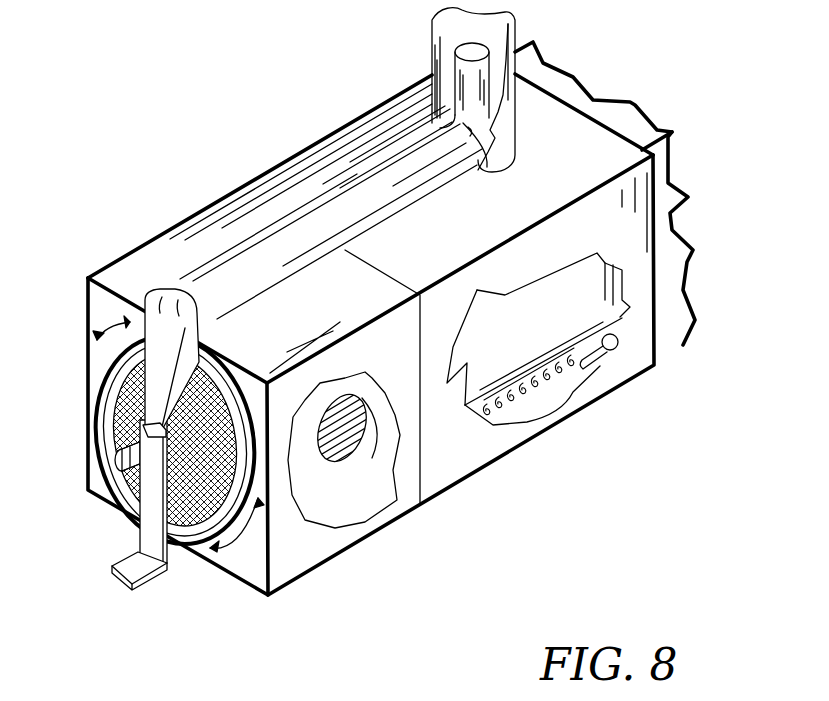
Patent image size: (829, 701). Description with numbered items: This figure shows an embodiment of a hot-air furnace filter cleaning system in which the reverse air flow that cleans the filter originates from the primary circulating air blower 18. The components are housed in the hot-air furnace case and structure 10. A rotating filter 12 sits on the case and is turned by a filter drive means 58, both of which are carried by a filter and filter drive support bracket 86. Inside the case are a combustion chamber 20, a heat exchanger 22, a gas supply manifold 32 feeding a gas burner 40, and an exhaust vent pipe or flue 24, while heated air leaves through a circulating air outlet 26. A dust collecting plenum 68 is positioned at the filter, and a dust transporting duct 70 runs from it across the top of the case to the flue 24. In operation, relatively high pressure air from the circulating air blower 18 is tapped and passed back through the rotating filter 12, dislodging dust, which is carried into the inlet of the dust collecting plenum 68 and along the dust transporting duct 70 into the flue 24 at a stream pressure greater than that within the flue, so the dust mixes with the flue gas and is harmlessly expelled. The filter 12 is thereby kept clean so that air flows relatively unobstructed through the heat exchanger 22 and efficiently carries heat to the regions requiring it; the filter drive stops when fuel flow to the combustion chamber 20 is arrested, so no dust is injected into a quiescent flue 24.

The hot-air furnace case and structure 10 is at (315, 168).
The rotating filter 12 is at (108, 358).
The circulating air blower 18 is at (363, 410).
The combustion chamber 20 is at (573, 392).
The heat exchanger 22 is at (588, 308).
The exhaust vent pipe (flue) 24 is at (505, 110).
The circulating air outlet 26 is at (613, 118).
The gas supply manifold 32 is at (618, 346).
The gas burner 40 is at (540, 395).
The filter drive means 58 is at (117, 467).
The dust collecting plenum 68 is at (145, 316).
The dust transporting duct 70 is at (283, 243).
The filter and filter drive support bracket 86 is at (153, 508).